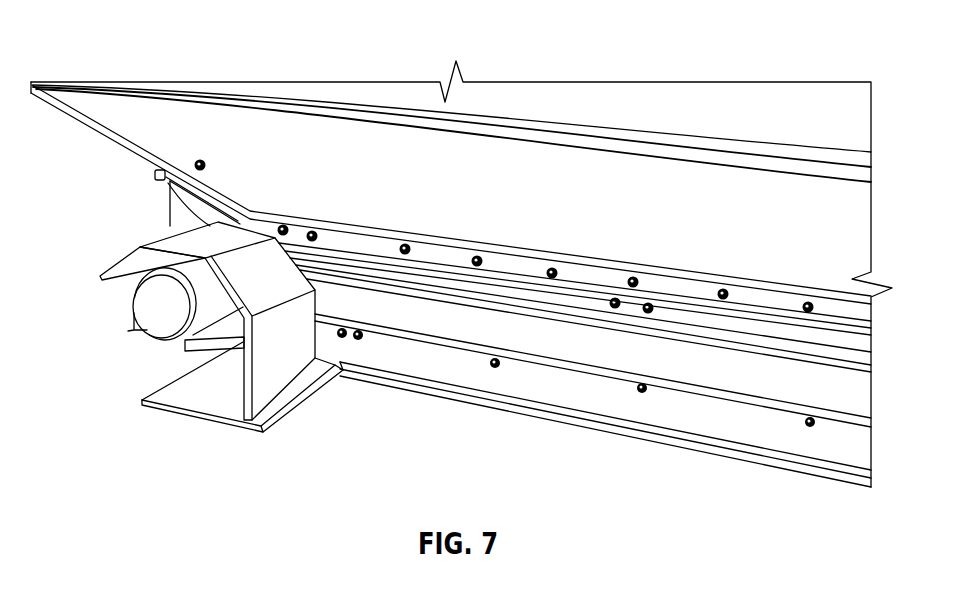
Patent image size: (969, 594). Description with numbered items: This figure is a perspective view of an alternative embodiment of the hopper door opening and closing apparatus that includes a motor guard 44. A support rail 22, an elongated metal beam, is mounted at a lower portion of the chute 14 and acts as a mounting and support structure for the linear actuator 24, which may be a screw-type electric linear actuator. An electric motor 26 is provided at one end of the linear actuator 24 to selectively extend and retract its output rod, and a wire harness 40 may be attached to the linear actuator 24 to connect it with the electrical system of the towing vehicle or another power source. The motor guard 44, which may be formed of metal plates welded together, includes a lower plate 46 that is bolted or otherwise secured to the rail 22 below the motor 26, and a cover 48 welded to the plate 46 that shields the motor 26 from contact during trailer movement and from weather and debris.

The chute 14 is at (627, 202).
The support rail 22 is at (717, 430).
The linear actuator 24 is at (636, 365).
The electric motor 26 is at (150, 307).
The wire harness 40 is at (168, 187).
The motor guard 44 is at (263, 392).
The lower plate 46 is at (175, 409).
The cover 48 is at (118, 262).